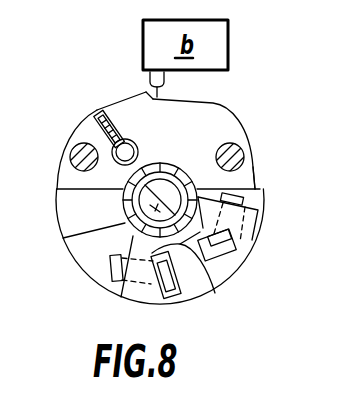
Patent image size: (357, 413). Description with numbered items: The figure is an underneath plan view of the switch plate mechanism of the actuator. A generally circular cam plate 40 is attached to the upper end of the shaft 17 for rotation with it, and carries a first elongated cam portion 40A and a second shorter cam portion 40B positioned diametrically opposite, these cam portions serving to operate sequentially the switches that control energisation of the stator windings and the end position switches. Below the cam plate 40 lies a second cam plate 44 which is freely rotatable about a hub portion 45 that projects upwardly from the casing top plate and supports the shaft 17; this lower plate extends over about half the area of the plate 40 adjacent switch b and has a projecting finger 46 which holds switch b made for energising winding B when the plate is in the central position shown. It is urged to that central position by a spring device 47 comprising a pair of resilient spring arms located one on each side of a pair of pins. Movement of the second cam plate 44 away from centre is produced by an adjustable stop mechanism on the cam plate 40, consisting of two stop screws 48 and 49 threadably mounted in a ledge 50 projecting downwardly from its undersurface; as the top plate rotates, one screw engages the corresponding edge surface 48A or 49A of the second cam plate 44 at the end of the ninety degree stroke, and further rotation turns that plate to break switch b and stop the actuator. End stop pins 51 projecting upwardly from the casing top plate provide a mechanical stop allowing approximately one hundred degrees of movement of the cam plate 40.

The shaft 17 is at (82, 239).
The cam plate 40 is at (262, 202).
The first elongated cam portion 40A is at (257, 243).
The second shorter cam portion 40B is at (92, 115).
The second cam plate 44 is at (210, 123).
The hub portion 45 is at (128, 243).
The projecting finger 46 is at (160, 100).
The spring device 47 is at (124, 113).
The stop screw 48 is at (240, 263).
The edge surface 48A is at (254, 176).
The stop screw 49 is at (172, 300).
The edge surface 49A is at (95, 191).
The ledge 50 is at (208, 292).
The end stop pins 51 is at (73, 146).